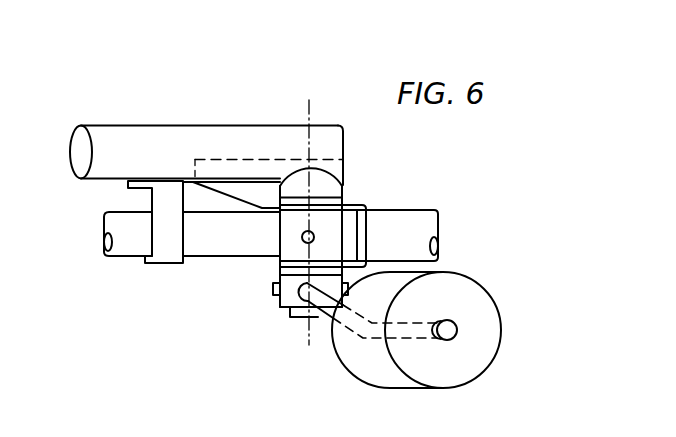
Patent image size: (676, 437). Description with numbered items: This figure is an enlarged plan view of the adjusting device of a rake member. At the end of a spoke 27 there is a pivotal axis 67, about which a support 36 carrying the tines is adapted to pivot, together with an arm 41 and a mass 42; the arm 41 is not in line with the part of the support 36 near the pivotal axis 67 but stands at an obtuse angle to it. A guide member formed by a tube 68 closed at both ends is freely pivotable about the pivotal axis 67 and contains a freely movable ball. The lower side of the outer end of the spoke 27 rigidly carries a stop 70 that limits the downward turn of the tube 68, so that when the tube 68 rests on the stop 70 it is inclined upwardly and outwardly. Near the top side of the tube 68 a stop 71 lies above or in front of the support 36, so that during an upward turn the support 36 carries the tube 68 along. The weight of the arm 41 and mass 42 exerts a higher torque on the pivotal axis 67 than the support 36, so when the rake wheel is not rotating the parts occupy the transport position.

The tube 68 is at (207, 110).
The pivotal axis 67 is at (309, 103).
The stop 71 is at (165, 197).
The stop 70 is at (244, 192).
The support 36 is at (115, 220).
The spoke 27 is at (413, 211).
The mass 42 is at (480, 293).
The arm 41 is at (447, 321).